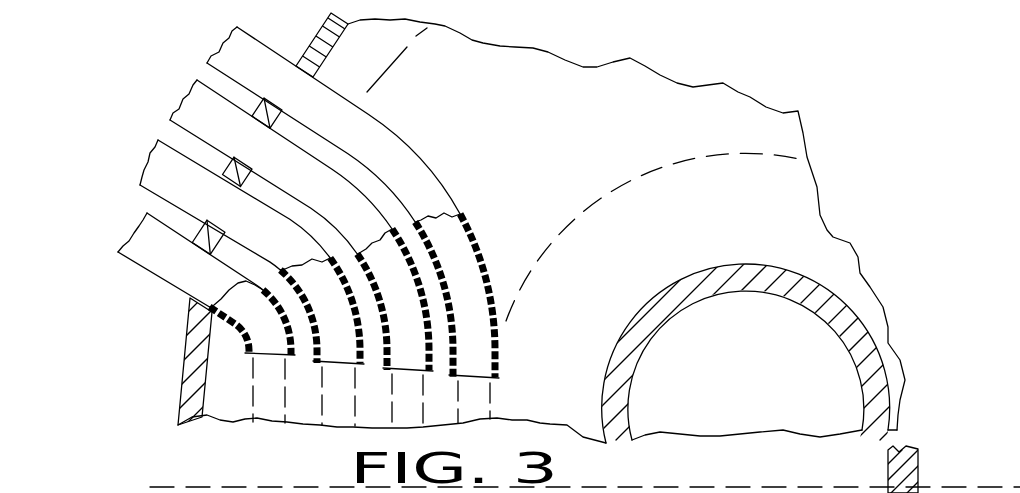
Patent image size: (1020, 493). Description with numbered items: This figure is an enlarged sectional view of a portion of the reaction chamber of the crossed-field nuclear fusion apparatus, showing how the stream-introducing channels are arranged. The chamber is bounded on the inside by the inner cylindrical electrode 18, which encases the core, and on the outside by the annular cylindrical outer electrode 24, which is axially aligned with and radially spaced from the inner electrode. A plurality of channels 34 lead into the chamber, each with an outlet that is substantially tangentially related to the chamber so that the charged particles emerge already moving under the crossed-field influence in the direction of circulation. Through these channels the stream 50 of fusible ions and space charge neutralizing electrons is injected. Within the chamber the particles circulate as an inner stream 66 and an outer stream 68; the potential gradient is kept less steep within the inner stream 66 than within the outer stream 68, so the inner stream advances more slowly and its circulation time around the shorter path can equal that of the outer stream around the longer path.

The inner cylindrical electrode 18 is at (770, 353).
The annular cylindrical outer electrode 24 is at (190, 365).
The channels 34 is at (272, 79).
The stream of fusible ions and space charge neutralizing electrons 50 is at (370, 409).
The inner stream 66 is at (507, 392).
The outer stream 68 is at (262, 397).